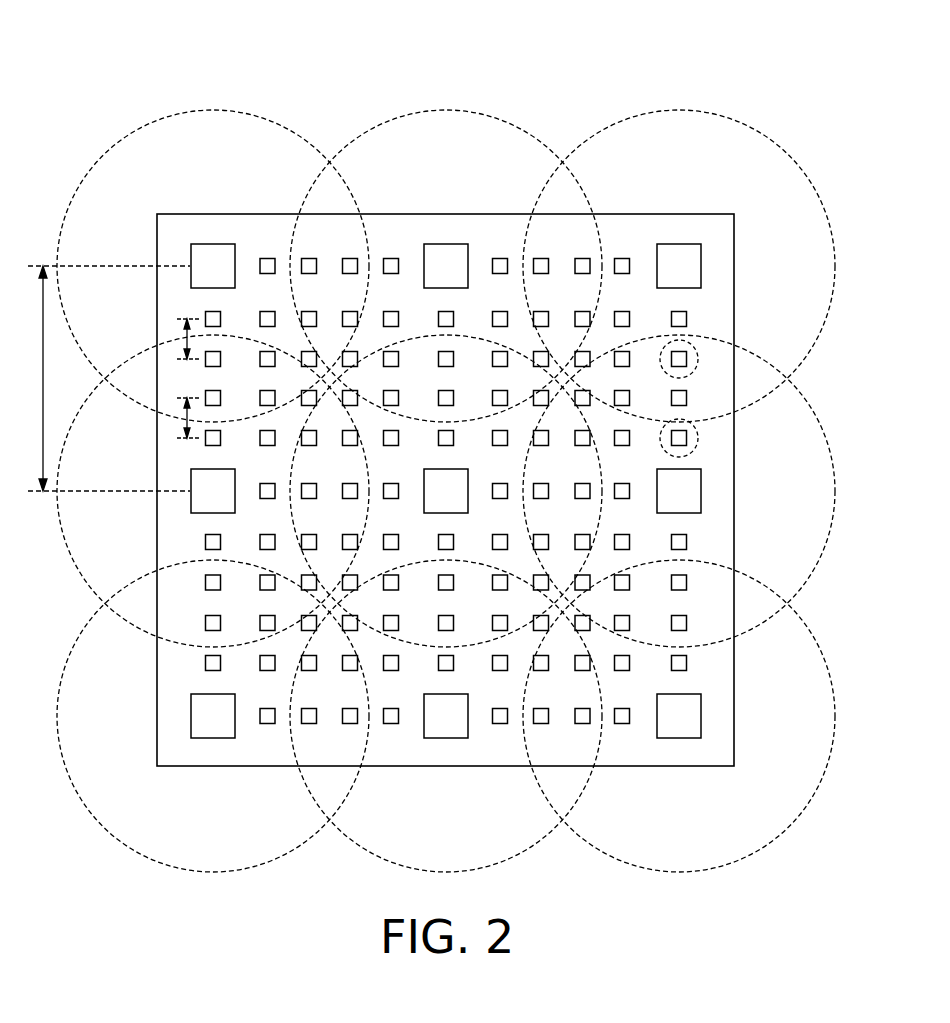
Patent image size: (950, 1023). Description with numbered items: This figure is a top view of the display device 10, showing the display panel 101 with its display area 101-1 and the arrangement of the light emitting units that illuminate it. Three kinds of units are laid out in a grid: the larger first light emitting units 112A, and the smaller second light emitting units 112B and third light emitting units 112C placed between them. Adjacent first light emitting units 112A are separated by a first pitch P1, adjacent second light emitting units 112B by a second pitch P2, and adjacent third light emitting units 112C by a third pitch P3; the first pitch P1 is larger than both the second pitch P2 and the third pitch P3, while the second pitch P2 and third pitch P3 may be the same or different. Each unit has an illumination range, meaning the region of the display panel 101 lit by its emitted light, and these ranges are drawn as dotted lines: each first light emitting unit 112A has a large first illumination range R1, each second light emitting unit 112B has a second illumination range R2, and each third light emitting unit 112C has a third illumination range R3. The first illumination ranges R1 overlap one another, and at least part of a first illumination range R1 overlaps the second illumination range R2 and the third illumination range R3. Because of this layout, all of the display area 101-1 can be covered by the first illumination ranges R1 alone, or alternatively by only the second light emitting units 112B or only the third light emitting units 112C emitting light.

The display device 10 is at (58, 43).
The display panel 101 is at (221, 221).
The display area 101-1 is at (216, 238).
The first light emitting unit 112A is at (203, 502).
The second light emitting unit 112B is at (210, 440).
The third light emitting unit 112C is at (210, 359).
The first illumination range R1 is at (447, 110).
The second illumination range R2 is at (694, 442).
The third illumination range R3 is at (699, 354).
The first pitch P1 is at (101, 378).
The second pitch P2 is at (185, 417).
The third pitch P3 is at (186, 334).